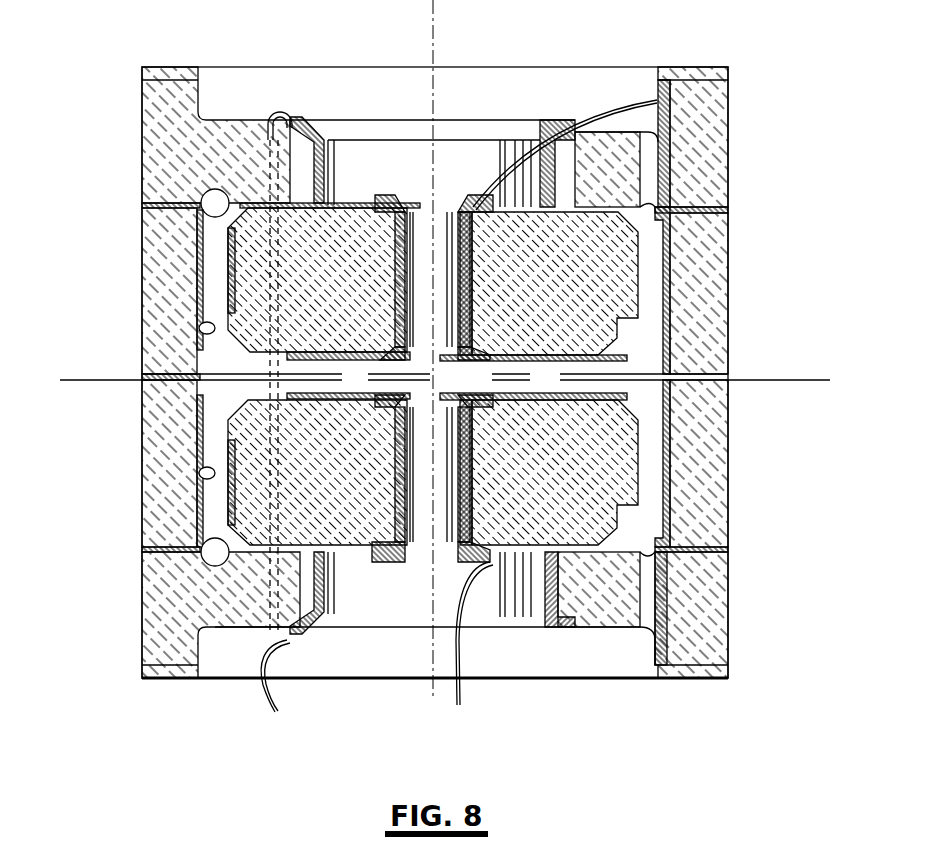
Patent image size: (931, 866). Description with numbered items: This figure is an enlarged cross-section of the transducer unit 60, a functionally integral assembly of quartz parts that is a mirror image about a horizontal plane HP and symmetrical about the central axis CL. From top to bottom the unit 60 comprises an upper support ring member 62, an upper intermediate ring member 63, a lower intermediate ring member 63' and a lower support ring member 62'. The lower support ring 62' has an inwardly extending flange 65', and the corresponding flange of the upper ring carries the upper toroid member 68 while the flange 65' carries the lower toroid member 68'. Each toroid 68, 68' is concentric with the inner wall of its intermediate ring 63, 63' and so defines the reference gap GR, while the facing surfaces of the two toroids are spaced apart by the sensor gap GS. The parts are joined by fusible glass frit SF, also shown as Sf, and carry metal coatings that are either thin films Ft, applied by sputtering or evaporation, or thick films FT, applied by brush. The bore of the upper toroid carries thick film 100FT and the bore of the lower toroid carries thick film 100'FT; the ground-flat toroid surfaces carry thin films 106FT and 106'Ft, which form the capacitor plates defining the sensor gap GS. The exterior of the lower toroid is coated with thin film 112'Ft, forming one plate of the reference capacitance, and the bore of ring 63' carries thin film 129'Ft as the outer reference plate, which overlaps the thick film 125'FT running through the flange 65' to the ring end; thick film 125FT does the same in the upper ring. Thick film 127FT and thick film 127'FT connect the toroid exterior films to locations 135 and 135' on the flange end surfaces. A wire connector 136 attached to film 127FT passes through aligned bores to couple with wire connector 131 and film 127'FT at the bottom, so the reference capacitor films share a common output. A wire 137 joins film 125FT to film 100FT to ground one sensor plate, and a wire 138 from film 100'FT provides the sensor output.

The transducer unit 60 is at (730, 298).
The upper support ring member 62 is at (473, 142).
The lower support ring member 62' is at (480, 608).
The upper intermediate ring member 63 is at (474, 290).
The lower intermediate ring member 63' is at (481, 463).
The inwardly extending flange 65' is at (570, 614).
The upper toroid member 68 is at (433, 281).
The lower toroid member 68' is at (433, 472).
The thick film 100FT is at (465, 197).
The thick film 100'FT is at (430, 497).
The thin film 106FT is at (457, 376).
The thin film 106'Ft is at (722, 405).
The thin film 112'Ft is at (365, 602).
The thick film 125FT is at (660, 84).
The thick film 125'FT is at (630, 697).
The thick film 127FT is at (302, 118).
The thick film 127'FT is at (360, 612).
The thin film 129'Ft is at (133, 482).
The wire connector 131 is at (268, 698).
The location on flange end surface 135 is at (298, 334).
The location on flange end surface 135' is at (332, 681).
The wire connector 136 is at (271, 118).
The wire 137 is at (588, 100).
The lower center wire 138 is at (455, 688).
The central axis CL is at (434, 28).
The horizontal plane HP is at (828, 410).
The thick film FT is at (82, 25).
The thin film Ft is at (204, 508).
The fusible glass frit SF is at (728, 206).
The fusible glass frit Sf is at (163, 203).
The reference gap GR is at (215, 532).
The sensor gap GS is at (545, 384).